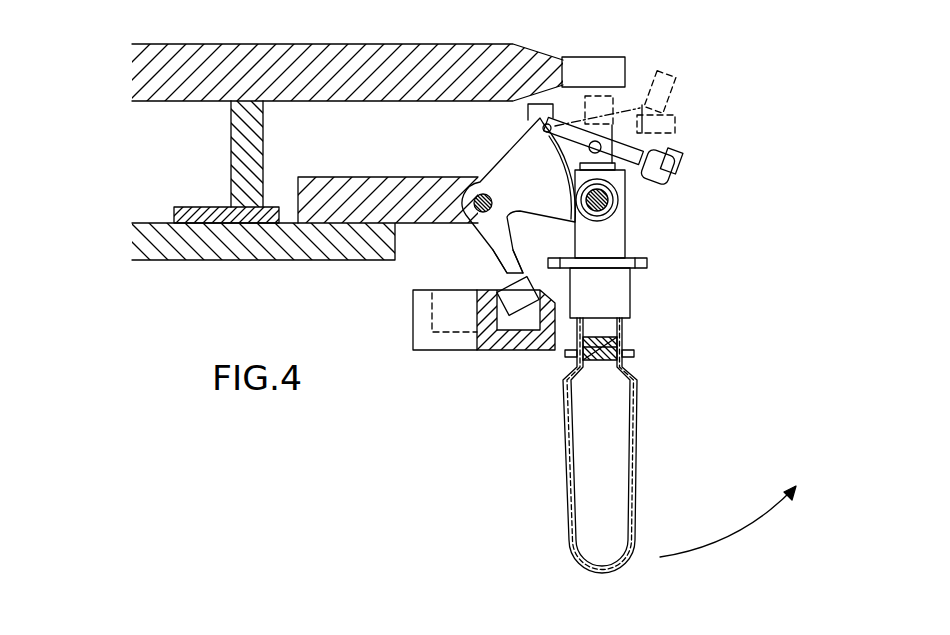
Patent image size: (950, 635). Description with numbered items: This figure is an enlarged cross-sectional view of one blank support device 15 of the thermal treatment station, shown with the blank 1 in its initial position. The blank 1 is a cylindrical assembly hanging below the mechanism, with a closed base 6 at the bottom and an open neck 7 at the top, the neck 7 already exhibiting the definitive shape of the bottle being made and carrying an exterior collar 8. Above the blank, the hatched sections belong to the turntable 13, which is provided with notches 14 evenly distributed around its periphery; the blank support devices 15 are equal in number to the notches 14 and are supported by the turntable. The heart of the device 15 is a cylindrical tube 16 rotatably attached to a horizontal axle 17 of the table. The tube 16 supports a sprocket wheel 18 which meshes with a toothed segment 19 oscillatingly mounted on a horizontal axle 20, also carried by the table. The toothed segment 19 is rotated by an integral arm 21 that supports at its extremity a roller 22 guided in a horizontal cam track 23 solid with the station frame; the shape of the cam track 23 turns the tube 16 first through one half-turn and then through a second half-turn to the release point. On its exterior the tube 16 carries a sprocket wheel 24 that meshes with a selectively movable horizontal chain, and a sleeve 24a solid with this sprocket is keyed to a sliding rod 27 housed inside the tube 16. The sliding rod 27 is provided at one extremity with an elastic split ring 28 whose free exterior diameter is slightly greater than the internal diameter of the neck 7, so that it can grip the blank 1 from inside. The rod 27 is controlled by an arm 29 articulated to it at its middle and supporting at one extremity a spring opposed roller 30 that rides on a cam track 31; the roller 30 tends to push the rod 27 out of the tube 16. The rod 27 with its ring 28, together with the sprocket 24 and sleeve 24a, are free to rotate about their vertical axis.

The blank 1 is at (570, 478).
The base 6 is at (597, 568).
The open neck 7 is at (598, 348).
The exterior collar 8 is at (634, 353).
The turntable 13 is at (401, 78).
The notches 14 is at (568, 68).
The blank support device 15 is at (663, 232).
The cylindrical tube 16 is at (616, 237).
The horizontal axle 17 is at (618, 196).
The sprocket wheel 18 is at (593, 215).
The toothed segment 19 is at (518, 195).
The horizontal axle 20 is at (484, 193).
The arm 21 is at (497, 252).
The roller 22 is at (485, 350).
The cam track 23 is at (540, 350).
The sprocket wheel 24 is at (647, 262).
The sleeve 24a is at (600, 293).
The sliding rod 27 is at (630, 113).
The elastic split ring 28 is at (612, 342).
The arm 29 is at (663, 133).
The spring opposed roller 30 is at (673, 158).
The cam track 31 is at (672, 145).